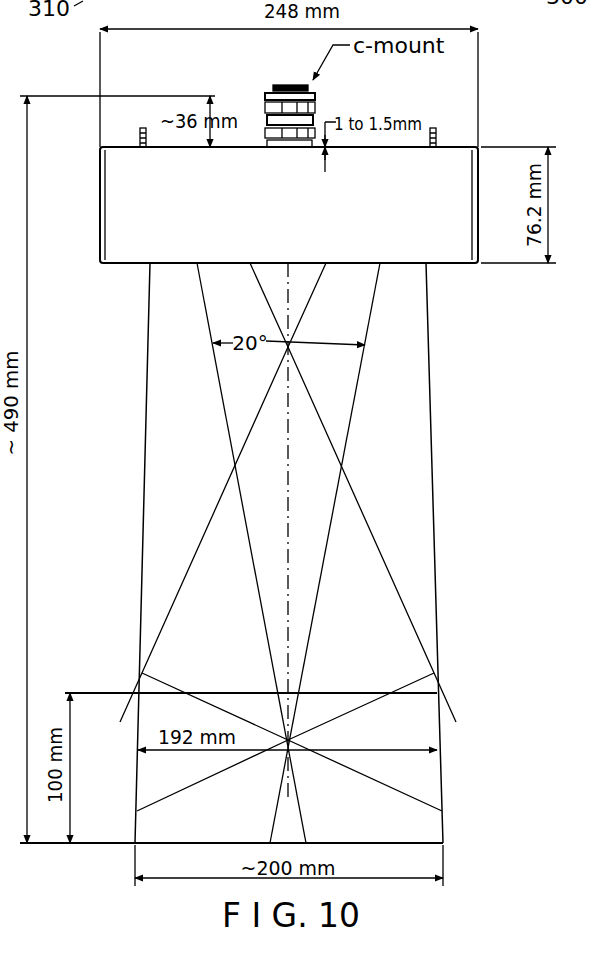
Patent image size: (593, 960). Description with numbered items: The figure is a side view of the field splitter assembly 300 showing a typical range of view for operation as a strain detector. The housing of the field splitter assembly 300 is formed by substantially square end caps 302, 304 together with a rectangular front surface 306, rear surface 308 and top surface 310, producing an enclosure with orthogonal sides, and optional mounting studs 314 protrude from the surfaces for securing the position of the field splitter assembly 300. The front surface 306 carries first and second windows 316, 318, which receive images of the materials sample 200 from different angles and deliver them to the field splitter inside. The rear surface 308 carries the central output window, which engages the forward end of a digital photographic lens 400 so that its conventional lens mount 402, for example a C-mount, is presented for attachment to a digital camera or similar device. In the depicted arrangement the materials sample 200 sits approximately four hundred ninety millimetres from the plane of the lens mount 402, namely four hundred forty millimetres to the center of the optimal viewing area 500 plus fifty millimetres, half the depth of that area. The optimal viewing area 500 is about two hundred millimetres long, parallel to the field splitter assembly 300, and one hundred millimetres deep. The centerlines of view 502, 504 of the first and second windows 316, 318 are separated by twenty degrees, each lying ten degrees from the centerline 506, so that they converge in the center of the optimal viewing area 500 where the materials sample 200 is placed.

The materials sample 200 is at (232, 843).
The field splitter assembly 300 is at (86, 245).
The square end cap 302 is at (97, 166).
The square end cap 304 is at (482, 161).
The front surface 306 is at (135, 266).
The rear surface 308 is at (250, 146).
The top surface 310 is at (289, 207).
The mounting studs 314 is at (143, 128).
The first window 316 is at (190, 270).
The second window 318 is at (383, 268).
The digital photographic lens 400 is at (316, 100).
The lens mount 402 is at (266, 92).
The optimal viewing area 500 is at (132, 765).
The centerline of view 502 is at (256, 597).
The centerline of view 504 is at (318, 605).
The centerline 506 is at (285, 420).